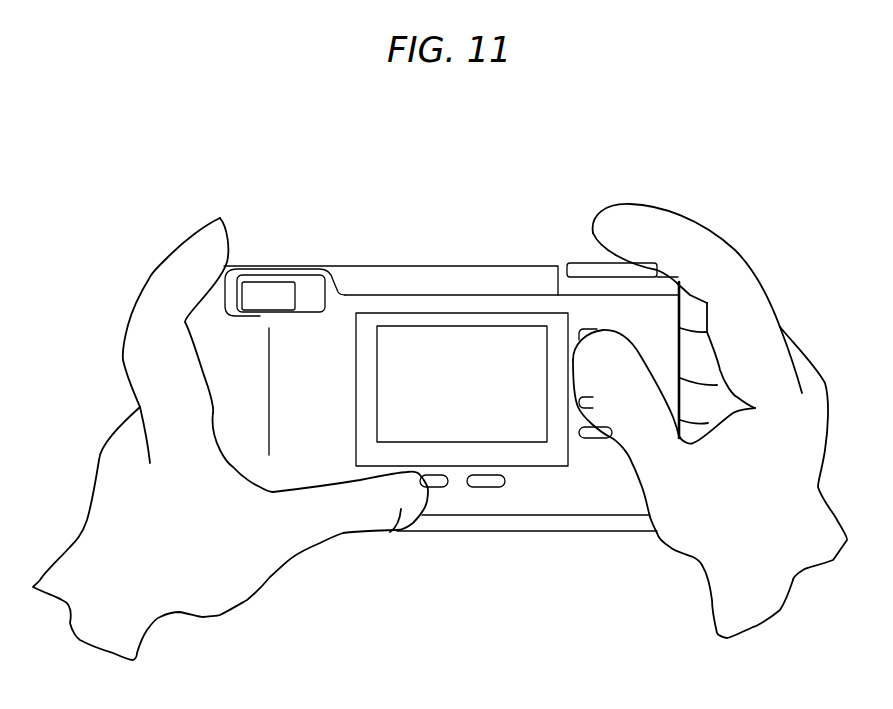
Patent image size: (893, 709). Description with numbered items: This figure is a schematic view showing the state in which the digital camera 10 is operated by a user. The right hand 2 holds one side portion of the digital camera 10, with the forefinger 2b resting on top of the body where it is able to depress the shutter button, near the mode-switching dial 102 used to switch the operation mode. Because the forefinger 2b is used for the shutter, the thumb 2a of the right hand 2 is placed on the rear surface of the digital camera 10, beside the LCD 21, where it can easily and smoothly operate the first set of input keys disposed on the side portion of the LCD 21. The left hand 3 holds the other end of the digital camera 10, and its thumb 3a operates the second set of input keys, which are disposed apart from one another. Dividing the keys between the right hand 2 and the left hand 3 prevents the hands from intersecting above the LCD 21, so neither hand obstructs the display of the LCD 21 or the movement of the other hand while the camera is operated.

The digital camera 10 is at (416, 245).
The mode-switching dial 102 is at (583, 262).
The LCD 21 is at (462, 442).
The right hand 2 is at (780, 323).
The thumb 2a is at (586, 358).
The forefinger 2b is at (632, 220).
The left hand 3 is at (205, 617).
The thumb 3a is at (388, 532).